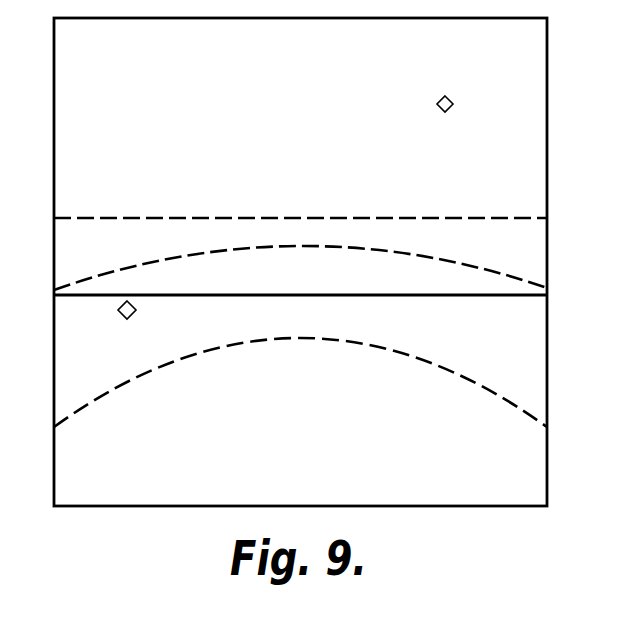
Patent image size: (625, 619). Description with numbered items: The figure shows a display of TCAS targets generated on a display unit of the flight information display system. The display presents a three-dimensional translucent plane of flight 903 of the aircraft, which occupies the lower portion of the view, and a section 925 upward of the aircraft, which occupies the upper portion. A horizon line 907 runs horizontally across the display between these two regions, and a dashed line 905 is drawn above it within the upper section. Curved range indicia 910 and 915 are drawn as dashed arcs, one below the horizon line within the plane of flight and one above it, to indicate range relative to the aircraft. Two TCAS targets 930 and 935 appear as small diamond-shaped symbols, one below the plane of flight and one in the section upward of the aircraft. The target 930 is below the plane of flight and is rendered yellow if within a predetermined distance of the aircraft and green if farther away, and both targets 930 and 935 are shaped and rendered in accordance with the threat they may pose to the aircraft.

The three-dimensional translucent plane of flight 903 is at (300, 400).
The dashed boundary line (upper layer boundary) 905 is at (405, 215).
The horizon line 907 is at (435, 297).
The range indicia 910 is at (430, 364).
The range indicia 915 is at (460, 260).
The section upward of the aircraft 925 is at (300, 118).
The TCAS target 930 is at (124, 318).
The TCAS target 935 is at (450, 98).